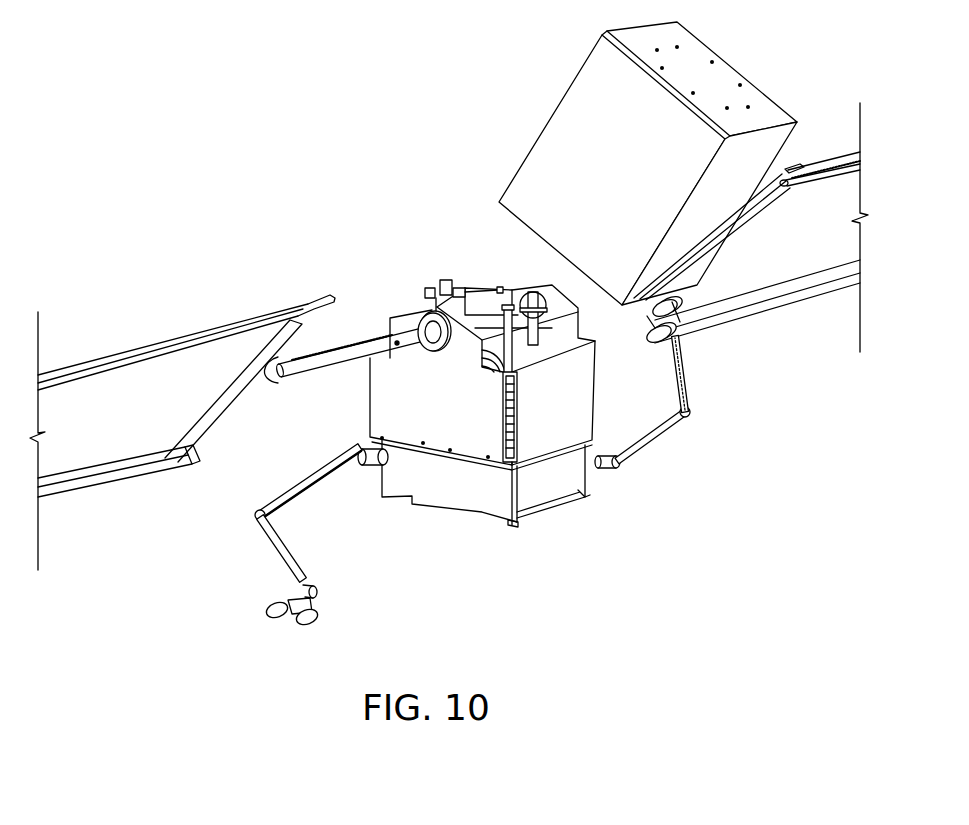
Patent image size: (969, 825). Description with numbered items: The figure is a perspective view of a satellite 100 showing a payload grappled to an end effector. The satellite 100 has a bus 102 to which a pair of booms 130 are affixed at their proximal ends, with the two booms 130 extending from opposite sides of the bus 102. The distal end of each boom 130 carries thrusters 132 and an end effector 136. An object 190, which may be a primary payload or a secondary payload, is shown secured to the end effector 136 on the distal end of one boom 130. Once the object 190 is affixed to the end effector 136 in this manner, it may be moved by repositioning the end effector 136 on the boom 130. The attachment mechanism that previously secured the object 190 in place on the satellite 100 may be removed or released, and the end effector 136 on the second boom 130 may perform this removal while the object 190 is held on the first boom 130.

The satellite 100 is at (321, 172).
The bus 102 is at (490, 513).
The boom 130 is at (267, 547).
The thruster 132 is at (266, 613).
The end effector 136 is at (320, 587).
The object 190 is at (541, 133).